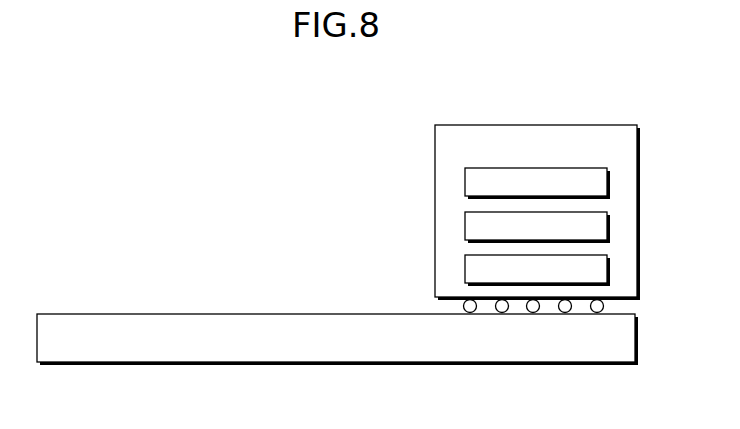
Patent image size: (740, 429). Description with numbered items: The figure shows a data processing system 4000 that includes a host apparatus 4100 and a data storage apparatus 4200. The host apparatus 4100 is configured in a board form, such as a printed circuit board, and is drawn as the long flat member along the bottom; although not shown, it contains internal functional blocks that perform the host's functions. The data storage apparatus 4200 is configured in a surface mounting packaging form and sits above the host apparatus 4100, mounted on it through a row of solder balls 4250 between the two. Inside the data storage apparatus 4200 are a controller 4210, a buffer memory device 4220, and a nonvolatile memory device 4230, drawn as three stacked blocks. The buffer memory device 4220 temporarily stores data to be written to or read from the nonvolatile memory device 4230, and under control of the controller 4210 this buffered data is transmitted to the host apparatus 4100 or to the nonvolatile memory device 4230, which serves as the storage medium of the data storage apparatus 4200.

The data processing system 4000 is at (117, 95).
The host apparatus 4100 is at (337, 339).
The data storage apparatus 4200 is at (537, 212).
The controller 4210 is at (537, 183).
The buffer memory device 4220 is at (537, 227).
The nonvolatile memory device 4230 is at (537, 270).
The solder ball 4250 is at (617, 307).